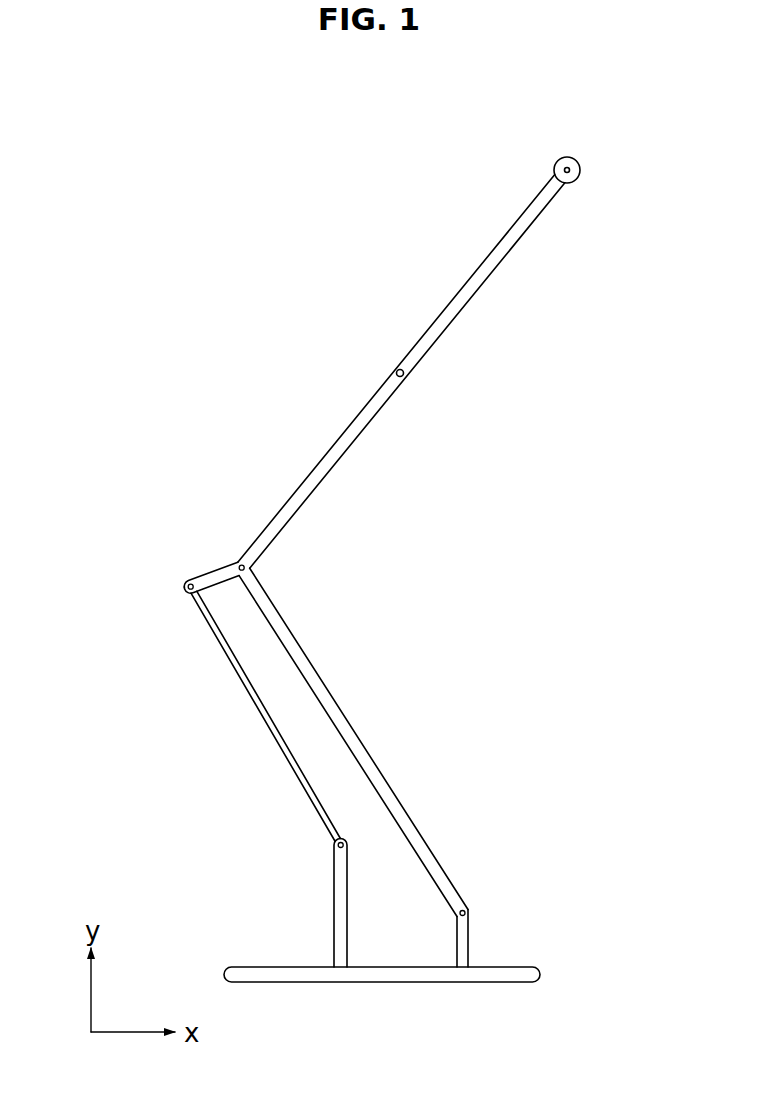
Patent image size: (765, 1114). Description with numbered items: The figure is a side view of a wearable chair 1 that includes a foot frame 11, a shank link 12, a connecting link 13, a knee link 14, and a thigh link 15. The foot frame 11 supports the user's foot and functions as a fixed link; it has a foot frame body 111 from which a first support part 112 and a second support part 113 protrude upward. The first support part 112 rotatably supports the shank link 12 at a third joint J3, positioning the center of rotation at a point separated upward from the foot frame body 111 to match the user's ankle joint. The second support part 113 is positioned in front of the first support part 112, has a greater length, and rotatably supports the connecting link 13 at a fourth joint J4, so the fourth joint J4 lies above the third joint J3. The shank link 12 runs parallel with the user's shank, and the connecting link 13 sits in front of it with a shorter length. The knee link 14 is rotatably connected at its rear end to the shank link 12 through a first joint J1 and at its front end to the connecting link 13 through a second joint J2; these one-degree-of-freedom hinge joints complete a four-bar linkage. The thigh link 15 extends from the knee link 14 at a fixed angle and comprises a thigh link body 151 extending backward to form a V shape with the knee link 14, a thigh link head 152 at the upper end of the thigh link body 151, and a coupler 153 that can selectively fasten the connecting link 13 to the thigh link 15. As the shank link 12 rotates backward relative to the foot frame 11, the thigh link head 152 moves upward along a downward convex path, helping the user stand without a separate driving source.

The wearable chair 1 is at (366, 91).
The foot frame 11 is at (407, 948).
The foot frame body 111 is at (399, 977).
The first support part 112 is at (458, 942).
The second support part 113 is at (336, 918).
The shank link 12 is at (360, 722).
The connecting link 13 is at (248, 729).
The knee link 14 is at (208, 560).
The thigh link 15 is at (447, 353).
The thigh link body 151 is at (448, 318).
The thigh link head 152 is at (579, 166).
The coupler 153 is at (396, 369).
The first joint J1 is at (250, 570).
The second joint J2 is at (186, 583).
The third joint J3 is at (467, 908).
The fourth joint J4 is at (336, 846).